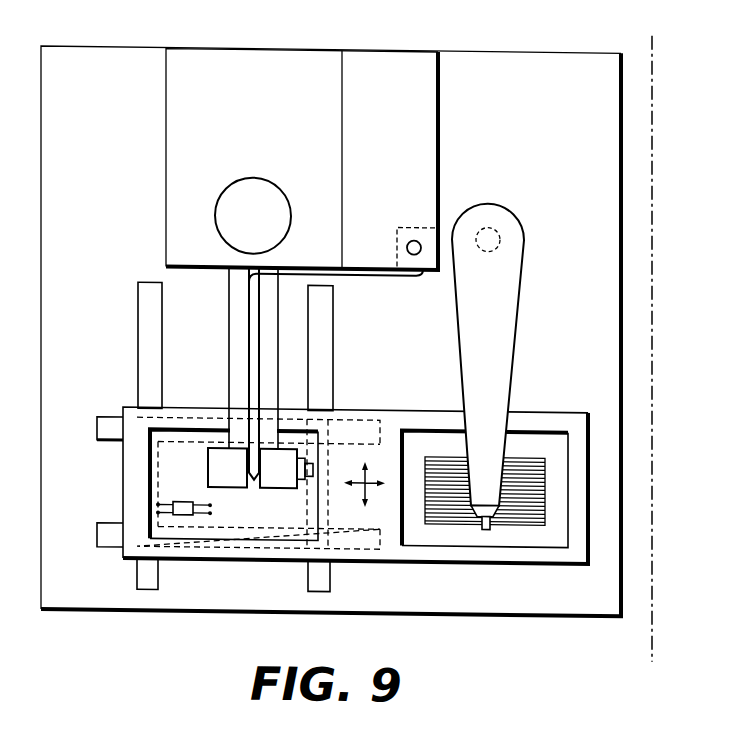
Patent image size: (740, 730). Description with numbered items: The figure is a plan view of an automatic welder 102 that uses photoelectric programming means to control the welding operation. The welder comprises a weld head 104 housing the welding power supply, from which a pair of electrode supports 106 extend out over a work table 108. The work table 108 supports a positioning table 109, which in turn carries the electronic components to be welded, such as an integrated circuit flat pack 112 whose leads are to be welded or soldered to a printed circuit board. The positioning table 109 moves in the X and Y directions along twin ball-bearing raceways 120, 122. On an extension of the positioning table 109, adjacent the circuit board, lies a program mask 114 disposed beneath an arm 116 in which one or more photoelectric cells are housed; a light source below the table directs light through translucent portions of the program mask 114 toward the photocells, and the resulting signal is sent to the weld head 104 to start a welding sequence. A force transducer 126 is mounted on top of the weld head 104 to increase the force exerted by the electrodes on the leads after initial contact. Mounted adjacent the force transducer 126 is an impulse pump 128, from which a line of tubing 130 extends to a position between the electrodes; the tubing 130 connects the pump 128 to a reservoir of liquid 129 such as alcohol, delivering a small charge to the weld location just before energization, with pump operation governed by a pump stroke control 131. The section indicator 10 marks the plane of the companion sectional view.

The section line 10 is at (652, 28).
The automatic welder 102 is at (360, 37).
The weld head 104 is at (252, 46).
The electrode supports 106 is at (266, 337).
The work table 108 is at (187, 609).
The positioning table 109 is at (240, 558).
The integrated circuit flat pack 112 is at (187, 513).
The program mask 114 is at (540, 514).
The arm 116 is at (518, 287).
The ball-bearing raceway 120 is at (99, 440).
The ball-bearing raceway 122 is at (138, 332).
The force transducer 126 is at (239, 175).
The impulse pump 128 is at (438, 143).
The reservoir of liquid 129 is at (421, 223).
The line of tubing 130 is at (390, 272).
The pump stroke control 131 is at (414, 250).